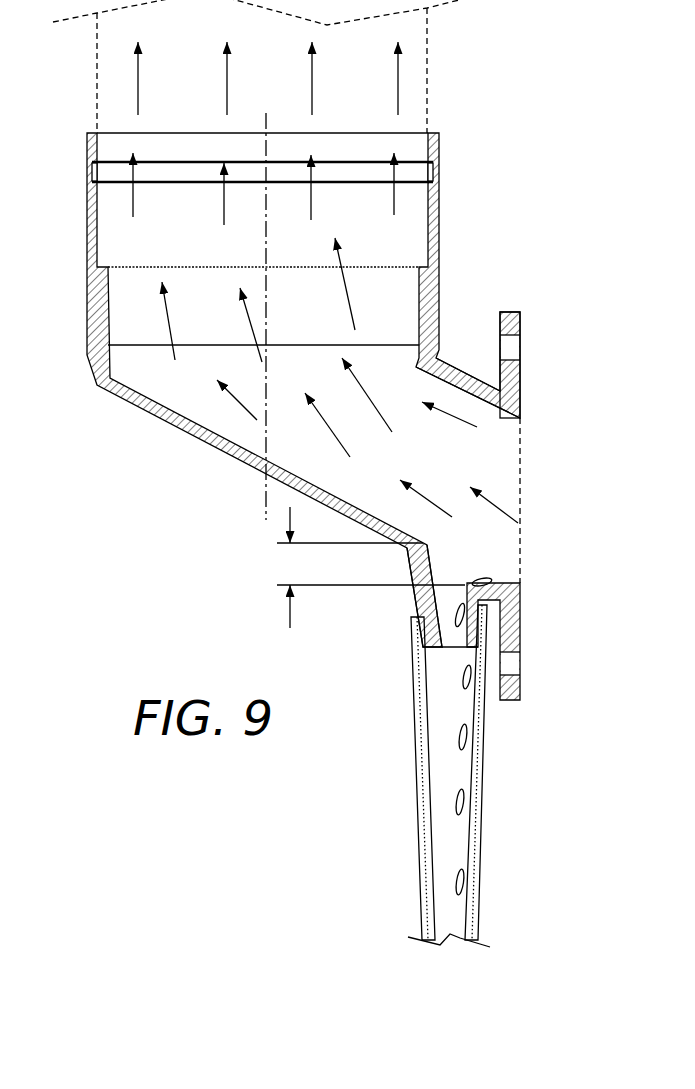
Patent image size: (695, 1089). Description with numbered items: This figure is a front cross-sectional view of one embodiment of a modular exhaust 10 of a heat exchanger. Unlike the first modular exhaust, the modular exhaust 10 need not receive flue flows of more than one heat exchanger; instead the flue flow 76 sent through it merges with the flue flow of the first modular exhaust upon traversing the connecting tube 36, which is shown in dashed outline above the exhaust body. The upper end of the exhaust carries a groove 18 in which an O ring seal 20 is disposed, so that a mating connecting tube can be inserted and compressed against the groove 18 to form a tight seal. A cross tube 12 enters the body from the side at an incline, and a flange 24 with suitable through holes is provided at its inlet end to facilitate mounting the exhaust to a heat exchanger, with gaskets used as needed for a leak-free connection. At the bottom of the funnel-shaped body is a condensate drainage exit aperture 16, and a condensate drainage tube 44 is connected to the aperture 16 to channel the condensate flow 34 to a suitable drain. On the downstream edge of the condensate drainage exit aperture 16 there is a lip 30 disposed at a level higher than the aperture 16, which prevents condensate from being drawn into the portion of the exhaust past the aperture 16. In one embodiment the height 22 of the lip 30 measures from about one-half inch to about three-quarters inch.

The modular exhaust 10 is at (140, 422).
The cross tube 12 is at (447, 368).
The condensate drainage exit aperture 16 is at (483, 600).
The groove 18 is at (434, 148).
The O ring seal 20 is at (433, 172).
The height of condensate drainage exit aperture lip 22 is at (307, 579).
The flange 24 is at (520, 323).
The lip 30 is at (415, 540).
The condensate flow 34 is at (460, 626).
The connecting tube 36 is at (97, 73).
The condensate drainage tube 44 is at (478, 843).
The flue flow 76 is at (400, 80).